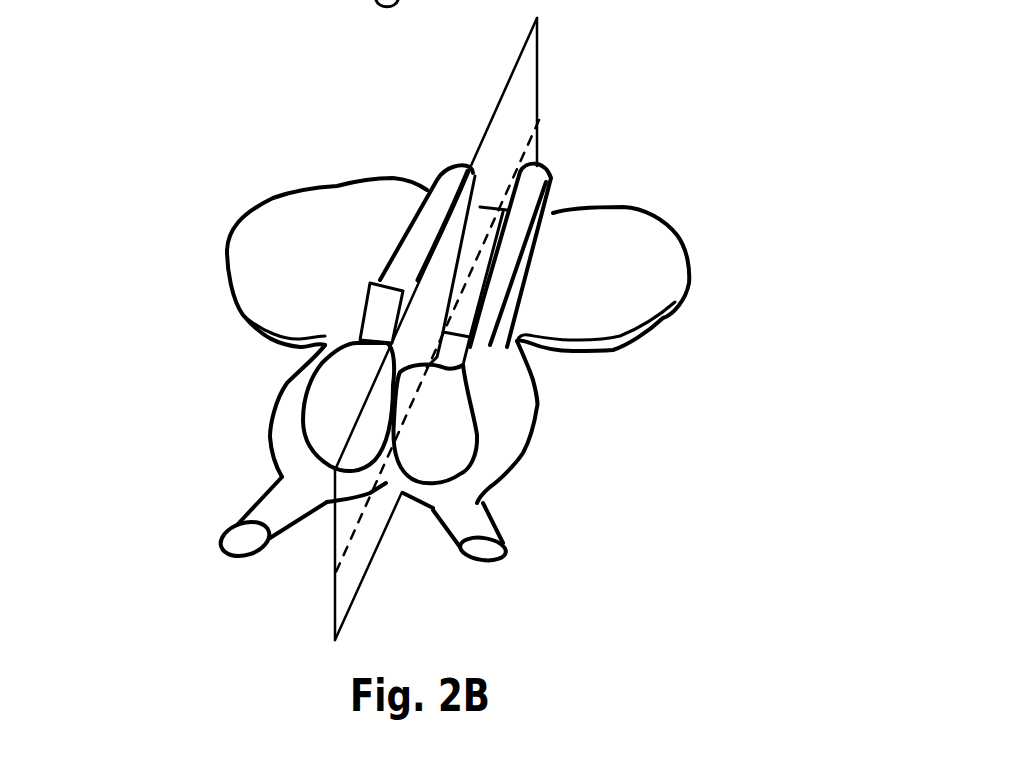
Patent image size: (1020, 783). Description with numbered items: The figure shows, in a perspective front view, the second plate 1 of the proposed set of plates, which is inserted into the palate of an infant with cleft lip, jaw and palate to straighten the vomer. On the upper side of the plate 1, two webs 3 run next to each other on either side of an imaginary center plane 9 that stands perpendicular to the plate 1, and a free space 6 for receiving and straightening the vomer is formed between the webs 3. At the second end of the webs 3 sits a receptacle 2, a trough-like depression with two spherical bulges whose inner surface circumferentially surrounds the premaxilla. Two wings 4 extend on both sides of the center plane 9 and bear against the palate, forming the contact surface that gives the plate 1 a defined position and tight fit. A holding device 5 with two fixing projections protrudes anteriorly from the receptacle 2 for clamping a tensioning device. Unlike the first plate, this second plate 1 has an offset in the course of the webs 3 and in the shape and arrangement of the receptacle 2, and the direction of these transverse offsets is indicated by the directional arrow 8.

The plate 1 is at (482, 257).
The receptacle 2 is at (364, 471).
The webs 3 is at (438, 195).
The wings 4 is at (300, 247).
The holding device 5 is at (280, 508).
The free space 6 is at (405, 347).
The directional arrow 8 is at (170, 633).
The center plane 9 is at (538, 62).